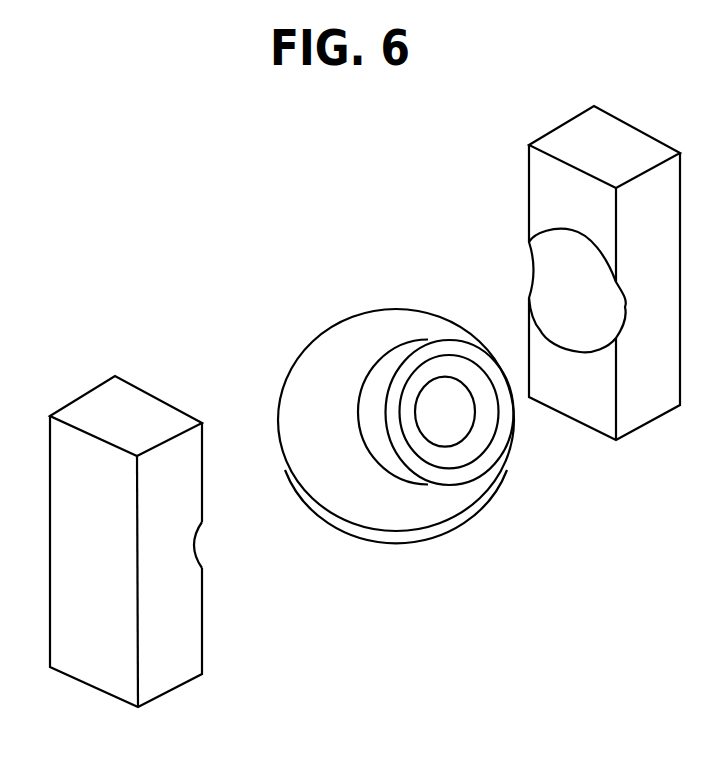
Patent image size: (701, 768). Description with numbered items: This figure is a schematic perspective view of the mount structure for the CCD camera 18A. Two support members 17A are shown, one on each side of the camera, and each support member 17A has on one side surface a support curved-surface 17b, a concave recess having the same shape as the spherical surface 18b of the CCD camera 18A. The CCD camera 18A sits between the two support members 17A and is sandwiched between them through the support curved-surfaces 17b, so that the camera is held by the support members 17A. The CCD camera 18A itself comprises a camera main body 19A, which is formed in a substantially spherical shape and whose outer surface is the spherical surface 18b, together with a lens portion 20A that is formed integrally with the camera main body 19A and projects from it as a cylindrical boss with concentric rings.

The support member 17A is at (104, 373).
The support curved-surface 17b is at (181, 543).
The CCD camera 18A is at (335, 310).
The camera main body 19A is at (310, 380).
The spherical surface 18b is at (342, 486).
The lens portion 20A is at (387, 362).